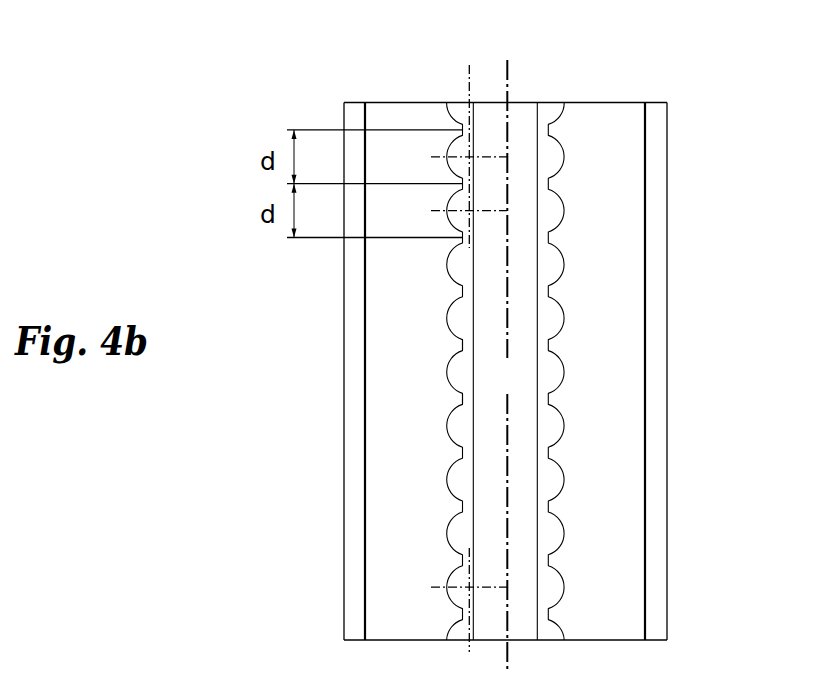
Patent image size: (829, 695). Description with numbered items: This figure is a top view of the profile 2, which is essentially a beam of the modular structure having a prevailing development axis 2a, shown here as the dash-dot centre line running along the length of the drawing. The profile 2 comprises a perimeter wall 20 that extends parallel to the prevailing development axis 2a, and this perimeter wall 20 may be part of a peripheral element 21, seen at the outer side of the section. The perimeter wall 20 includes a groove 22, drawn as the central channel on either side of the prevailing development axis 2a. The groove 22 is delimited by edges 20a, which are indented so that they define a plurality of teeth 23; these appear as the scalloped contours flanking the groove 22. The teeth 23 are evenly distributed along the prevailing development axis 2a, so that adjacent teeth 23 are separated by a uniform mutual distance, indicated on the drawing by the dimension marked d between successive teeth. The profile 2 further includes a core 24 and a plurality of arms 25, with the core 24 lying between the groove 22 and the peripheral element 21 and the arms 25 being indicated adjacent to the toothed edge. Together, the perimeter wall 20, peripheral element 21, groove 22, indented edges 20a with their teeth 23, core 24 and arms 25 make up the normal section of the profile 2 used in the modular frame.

The profile 2 is at (697, 425).
The prevailing development axis 2a is at (507, 80).
The perimeter wall 20 is at (630, 622).
The edges 20a is at (563, 316).
The peripheral element 21 is at (657, 120).
The groove 22 is at (492, 390).
The teeth 23 is at (462, 397).
The core 24 is at (528, 497).
The arms 25 is at (462, 113).